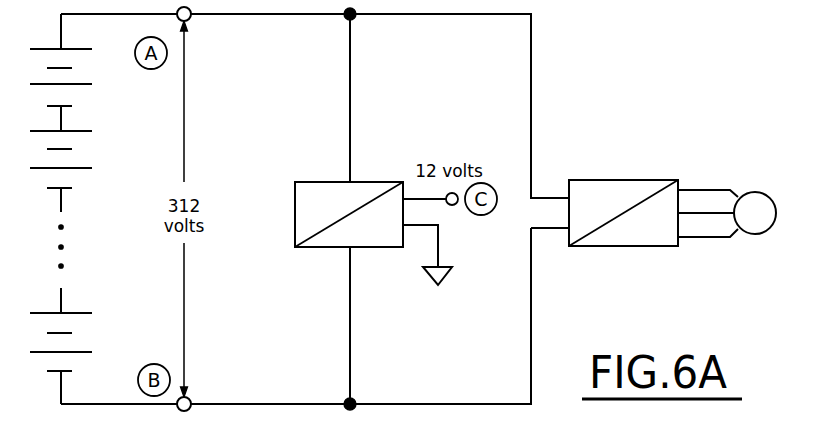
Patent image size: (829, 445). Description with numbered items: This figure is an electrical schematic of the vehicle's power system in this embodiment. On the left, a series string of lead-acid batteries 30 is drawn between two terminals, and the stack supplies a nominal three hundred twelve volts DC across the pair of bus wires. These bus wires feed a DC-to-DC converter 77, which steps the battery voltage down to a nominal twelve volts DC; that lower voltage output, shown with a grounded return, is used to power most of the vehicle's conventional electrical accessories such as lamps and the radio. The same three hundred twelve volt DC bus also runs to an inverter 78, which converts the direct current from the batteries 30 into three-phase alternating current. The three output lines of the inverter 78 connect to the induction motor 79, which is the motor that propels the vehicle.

The batteries 30 is at (95, 73).
The DC-to-DC converter 77 is at (287, 212).
The inverter 78 is at (617, 172).
The induction motor 79 is at (775, 190).